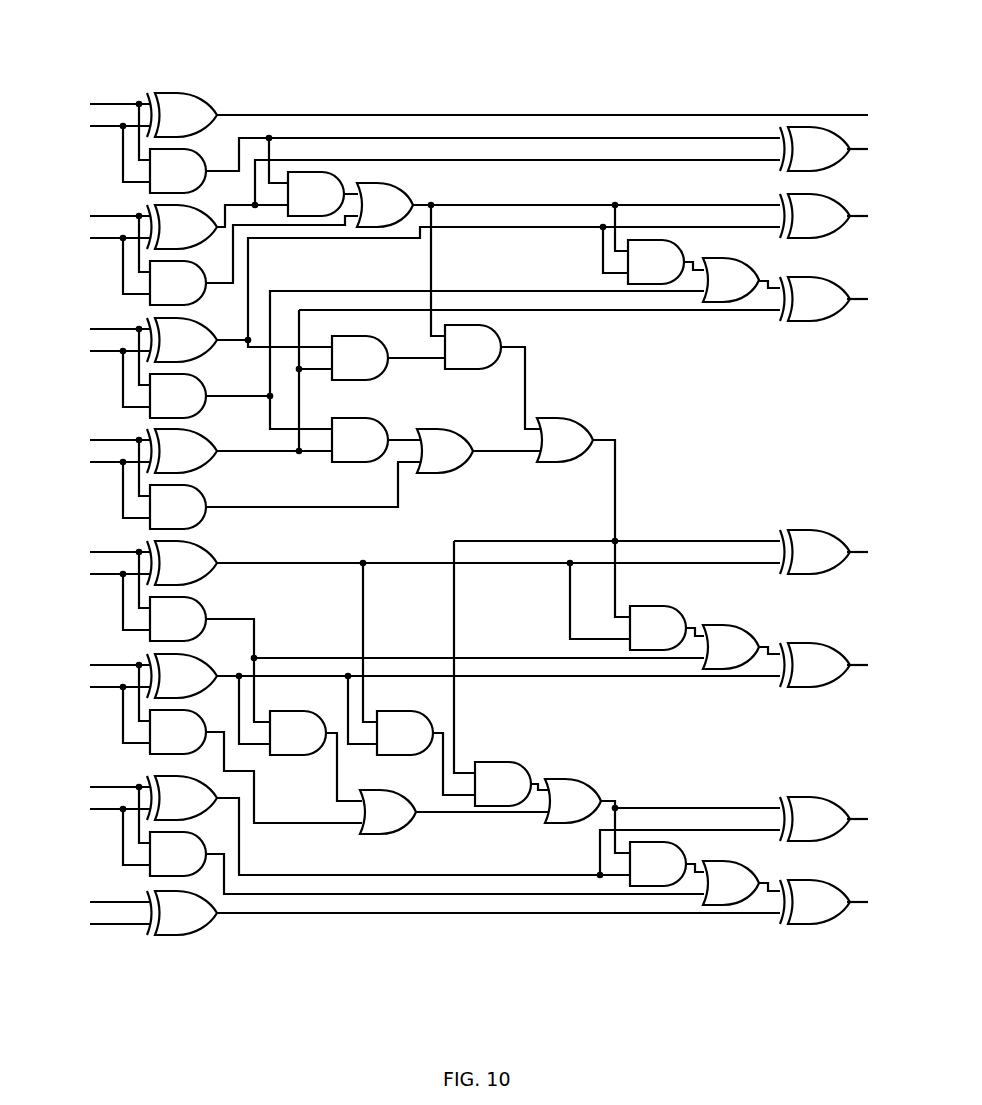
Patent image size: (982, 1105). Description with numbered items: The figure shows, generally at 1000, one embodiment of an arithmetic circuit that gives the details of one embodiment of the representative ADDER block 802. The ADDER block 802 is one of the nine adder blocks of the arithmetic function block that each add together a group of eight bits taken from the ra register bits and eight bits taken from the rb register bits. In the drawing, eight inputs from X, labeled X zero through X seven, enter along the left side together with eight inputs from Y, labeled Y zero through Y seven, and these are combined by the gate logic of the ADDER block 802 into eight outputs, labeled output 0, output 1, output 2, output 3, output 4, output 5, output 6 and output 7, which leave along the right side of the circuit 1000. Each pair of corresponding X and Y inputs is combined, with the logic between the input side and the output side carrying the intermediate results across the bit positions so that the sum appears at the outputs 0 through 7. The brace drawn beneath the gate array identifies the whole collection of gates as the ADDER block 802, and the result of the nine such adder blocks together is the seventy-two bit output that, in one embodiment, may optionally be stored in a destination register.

The arithmetic circuit embodiment 1000 is at (724, 44).
The ADDER block 802 is at (863, 957).
The output 0 is at (551, 115).
The output 1 is at (832, 149).
The output 2 is at (832, 216).
The output 3 is at (832, 299).
The output 4 is at (832, 552).
The output 5 is at (832, 665).
The output 6 is at (832, 819).
The output 7 is at (832, 902).